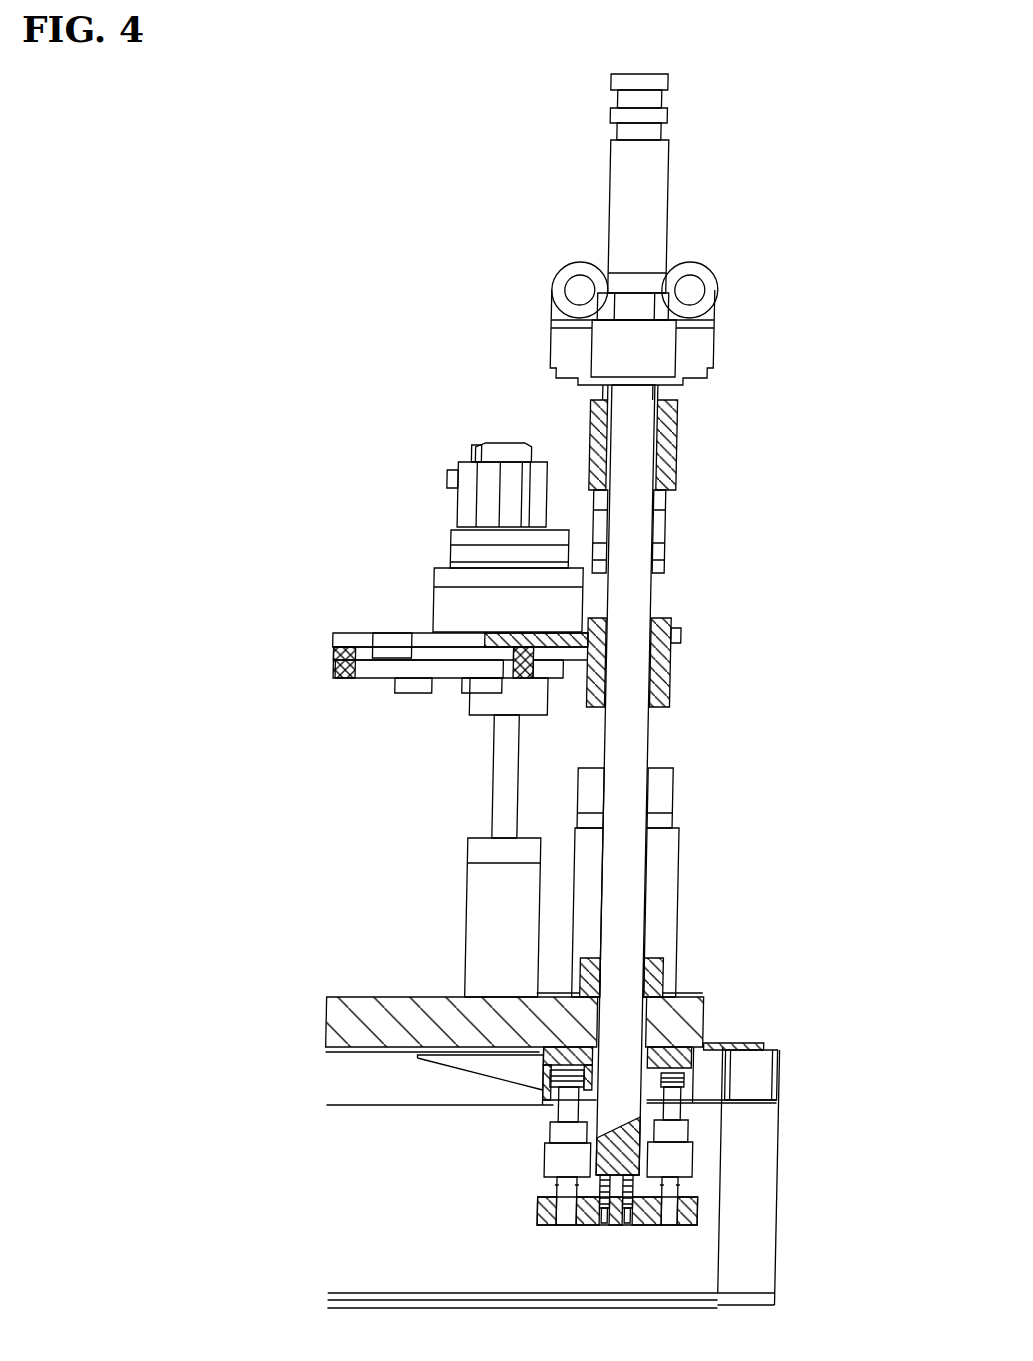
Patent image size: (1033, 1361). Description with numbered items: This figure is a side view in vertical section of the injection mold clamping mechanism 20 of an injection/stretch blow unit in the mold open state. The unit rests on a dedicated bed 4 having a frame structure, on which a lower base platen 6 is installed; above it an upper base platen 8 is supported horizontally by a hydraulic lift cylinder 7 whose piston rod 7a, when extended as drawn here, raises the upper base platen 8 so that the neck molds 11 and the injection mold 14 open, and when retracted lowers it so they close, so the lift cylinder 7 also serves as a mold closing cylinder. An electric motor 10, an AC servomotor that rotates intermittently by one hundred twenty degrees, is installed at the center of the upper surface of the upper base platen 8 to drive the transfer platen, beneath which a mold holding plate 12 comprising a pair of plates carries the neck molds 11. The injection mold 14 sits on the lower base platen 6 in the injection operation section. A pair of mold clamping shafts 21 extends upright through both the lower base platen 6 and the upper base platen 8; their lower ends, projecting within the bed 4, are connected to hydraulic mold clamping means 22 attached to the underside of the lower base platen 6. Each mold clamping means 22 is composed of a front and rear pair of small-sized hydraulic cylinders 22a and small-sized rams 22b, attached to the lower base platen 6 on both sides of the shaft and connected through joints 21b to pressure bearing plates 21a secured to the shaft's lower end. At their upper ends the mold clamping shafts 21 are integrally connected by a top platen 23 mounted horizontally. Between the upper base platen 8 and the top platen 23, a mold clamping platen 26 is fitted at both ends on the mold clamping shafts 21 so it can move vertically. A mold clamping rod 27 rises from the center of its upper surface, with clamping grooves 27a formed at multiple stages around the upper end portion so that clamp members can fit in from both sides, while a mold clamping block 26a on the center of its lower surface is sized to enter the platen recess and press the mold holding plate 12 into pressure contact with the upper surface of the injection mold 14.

The bed 4 is at (772, 1257).
The lower base platen 6 is at (696, 1012).
The hydraulic lift cylinder 7 is at (496, 922).
The piston rod 7a is at (510, 770).
The upper base platen 8 is at (401, 635).
The electric motor 10 is at (474, 512).
The neck molds 11 is at (407, 688).
The mold holding plate 12 is at (382, 677).
The injection mold 14 is at (667, 793).
The injection mold clamping mechanism 20 is at (570, 417).
The mold clamping shafts 21 is at (626, 595).
The pressure bearing plates 21a is at (610, 1228).
The joints 21b is at (567, 1162).
The hydraulic mold clamping means 22 is at (710, 1180).
The small-sized hydraulic cylinders 22a is at (552, 1080).
The small-sized rams 22b is at (577, 1115).
The top platen 23 is at (689, 347).
The mold clamping platen 26 is at (668, 437).
The mold clamping block 26a is at (662, 522).
The mold clamping rod 27 is at (650, 195).
The clamping grooves 27a is at (656, 130).